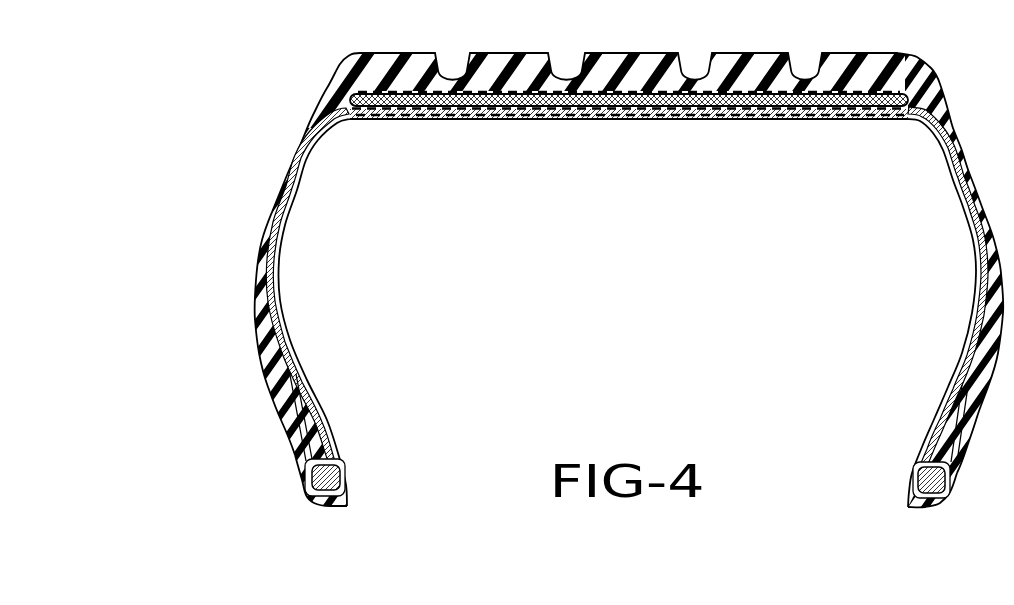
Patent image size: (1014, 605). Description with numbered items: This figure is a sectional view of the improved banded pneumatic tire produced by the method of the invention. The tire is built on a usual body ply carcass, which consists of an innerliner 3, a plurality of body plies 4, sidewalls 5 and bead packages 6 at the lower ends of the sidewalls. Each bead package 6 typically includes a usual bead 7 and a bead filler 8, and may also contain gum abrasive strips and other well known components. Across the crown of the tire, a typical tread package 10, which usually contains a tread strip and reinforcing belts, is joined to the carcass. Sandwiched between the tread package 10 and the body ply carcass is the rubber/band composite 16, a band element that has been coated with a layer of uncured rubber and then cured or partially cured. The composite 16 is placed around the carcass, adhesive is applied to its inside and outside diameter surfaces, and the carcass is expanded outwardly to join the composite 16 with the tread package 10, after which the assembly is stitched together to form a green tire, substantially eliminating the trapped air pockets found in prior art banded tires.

The tread package 10 is at (390, 57).
The body plies 4 is at (305, 152).
The sidewalls 5 is at (255, 301).
The innerliner 3 is at (770, 123).
The rubber/band composite 16 is at (447, 112).
The bead packages 6 is at (346, 466).
The bead 7 is at (320, 482).
The bead filler 8 is at (313, 428).